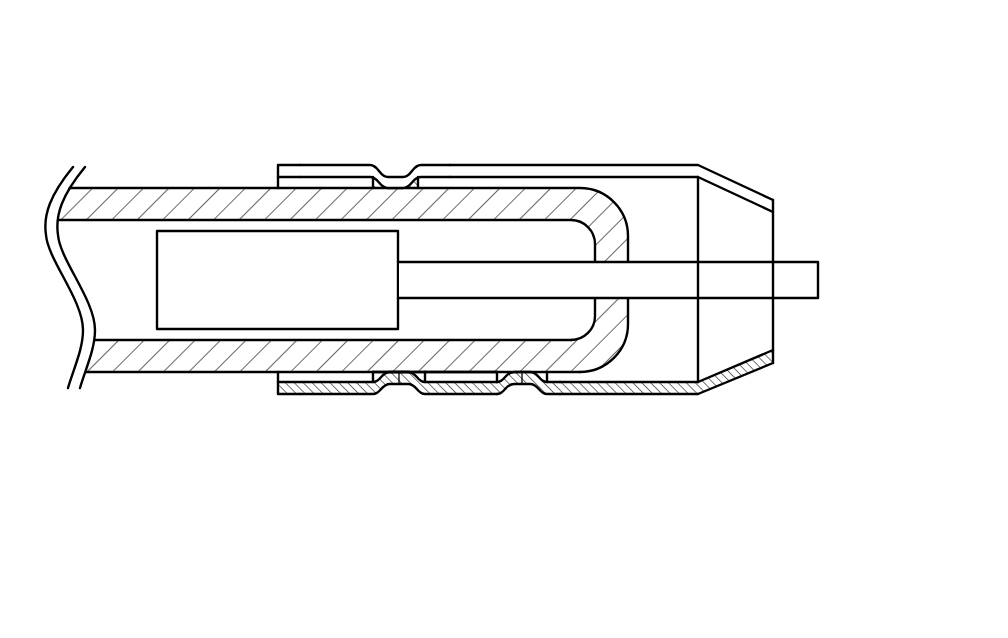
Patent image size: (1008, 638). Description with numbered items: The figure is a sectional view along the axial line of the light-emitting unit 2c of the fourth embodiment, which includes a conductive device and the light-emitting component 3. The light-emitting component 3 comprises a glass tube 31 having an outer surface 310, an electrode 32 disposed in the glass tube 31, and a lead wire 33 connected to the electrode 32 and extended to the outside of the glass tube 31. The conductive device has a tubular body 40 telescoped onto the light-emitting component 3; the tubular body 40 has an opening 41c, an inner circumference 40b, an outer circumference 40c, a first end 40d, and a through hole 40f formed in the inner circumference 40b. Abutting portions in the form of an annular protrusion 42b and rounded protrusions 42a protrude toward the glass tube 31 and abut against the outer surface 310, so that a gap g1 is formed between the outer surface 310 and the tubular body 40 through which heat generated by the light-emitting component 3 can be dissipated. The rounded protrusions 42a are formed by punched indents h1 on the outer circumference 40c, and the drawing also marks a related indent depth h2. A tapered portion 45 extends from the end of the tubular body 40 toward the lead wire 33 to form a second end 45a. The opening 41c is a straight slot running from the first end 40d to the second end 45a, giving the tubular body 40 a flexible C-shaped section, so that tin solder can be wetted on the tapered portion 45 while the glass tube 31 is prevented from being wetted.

The light-emitting unit 2c is at (73, 37).
The light-emitting component 3 is at (195, 188).
The glass tube 31 is at (600, 218).
The outer surface 310 is at (152, 373).
The electrode 32 is at (335, 250).
The lead wire 33 is at (802, 283).
The tubular body 40 is at (600, 394).
The inner circumference 40b is at (278, 390).
The outer circumference 40c is at (323, 395).
The first end 40d is at (279, 180).
The through hole 40f is at (275, 185).
The opening 41c is at (473, 172).
The rounded protrusion 42a is at (497, 385).
The annular protrusion 42b is at (420, 166).
The tapered portion 45 is at (723, 176).
The second end 45a is at (775, 207).
The gap g1 is at (442, 384).
The punched indent h1 is at (513, 392).
The second height h2 is at (398, 392).